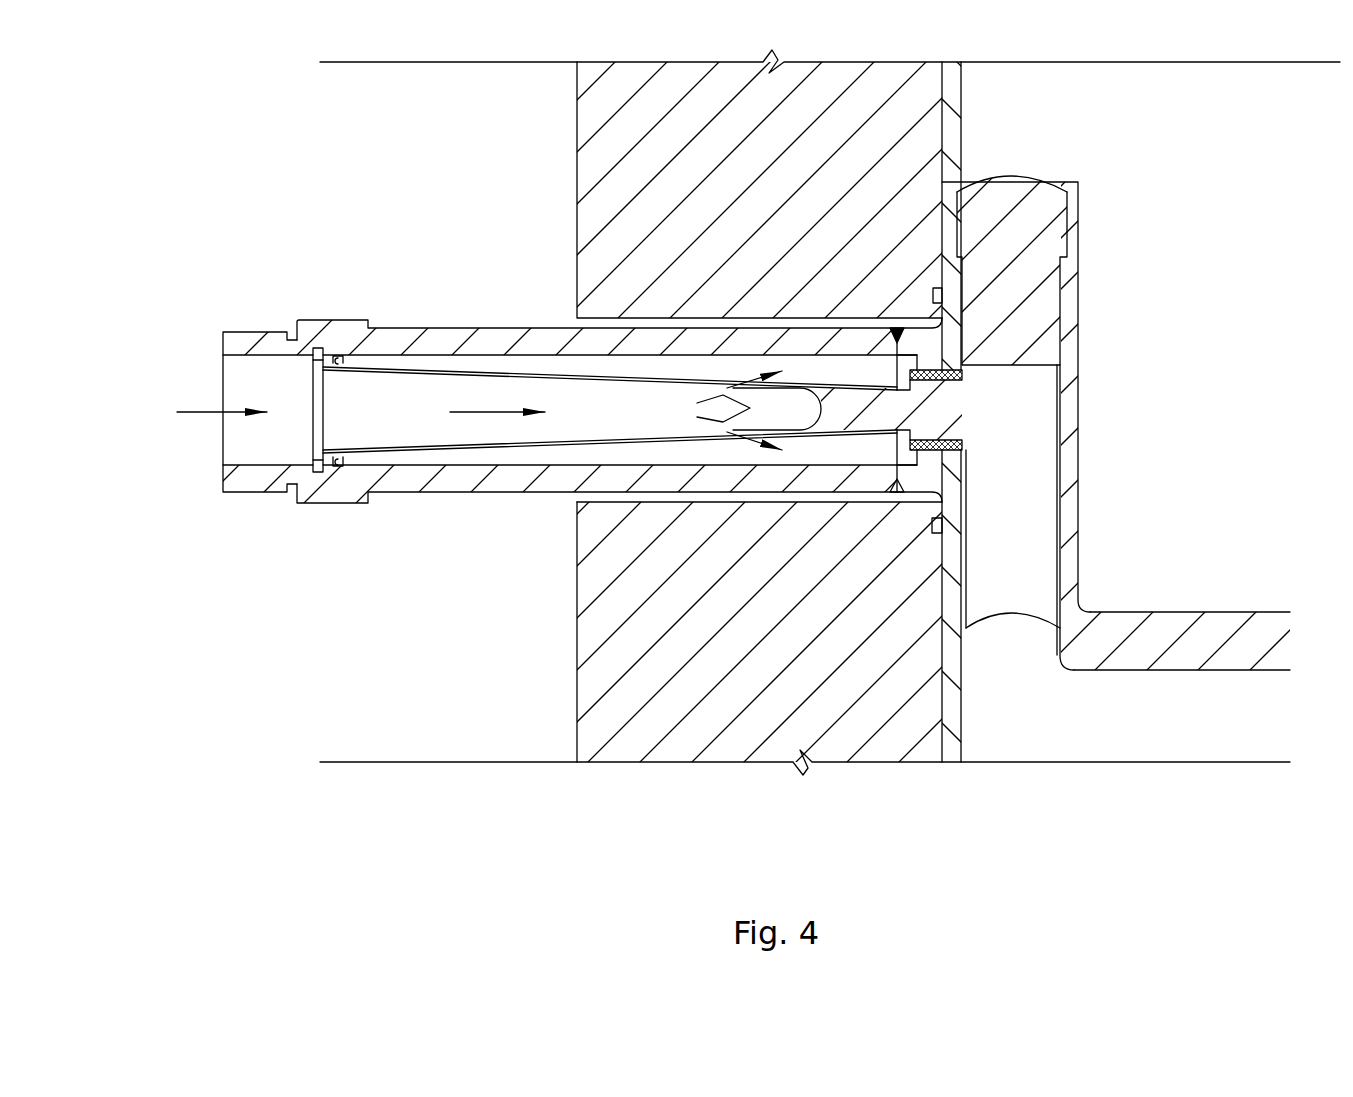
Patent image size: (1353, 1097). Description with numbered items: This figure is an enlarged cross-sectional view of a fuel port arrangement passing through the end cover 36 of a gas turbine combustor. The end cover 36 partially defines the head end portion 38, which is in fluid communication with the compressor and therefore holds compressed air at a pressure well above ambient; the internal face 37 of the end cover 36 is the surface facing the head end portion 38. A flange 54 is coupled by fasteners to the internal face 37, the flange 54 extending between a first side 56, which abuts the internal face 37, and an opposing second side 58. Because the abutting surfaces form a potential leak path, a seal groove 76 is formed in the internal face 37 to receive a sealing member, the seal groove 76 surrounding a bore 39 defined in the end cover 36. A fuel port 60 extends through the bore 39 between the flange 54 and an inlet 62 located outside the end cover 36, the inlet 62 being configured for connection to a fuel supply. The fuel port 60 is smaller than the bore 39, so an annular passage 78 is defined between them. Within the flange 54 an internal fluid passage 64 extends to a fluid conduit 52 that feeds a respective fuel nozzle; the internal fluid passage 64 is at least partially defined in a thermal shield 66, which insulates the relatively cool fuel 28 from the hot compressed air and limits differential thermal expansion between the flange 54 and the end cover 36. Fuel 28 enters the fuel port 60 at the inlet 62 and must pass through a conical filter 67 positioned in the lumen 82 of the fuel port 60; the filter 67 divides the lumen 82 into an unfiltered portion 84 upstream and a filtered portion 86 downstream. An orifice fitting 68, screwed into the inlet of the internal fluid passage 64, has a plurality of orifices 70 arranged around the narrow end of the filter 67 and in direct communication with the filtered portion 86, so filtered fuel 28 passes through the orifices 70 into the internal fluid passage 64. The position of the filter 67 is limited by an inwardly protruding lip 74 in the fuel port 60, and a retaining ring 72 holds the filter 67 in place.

The fuel 28 is at (218, 412).
The end cover 36 is at (634, 730).
The internal face 37 is at (945, 104).
The head end portion 38 is at (1236, 424).
The bore 39 is at (640, 318).
The fluid conduit 52 is at (1200, 745).
The flange 54 is at (1070, 467).
The first side 56 is at (938, 695).
The second side 58 is at (1080, 303).
The fuel port 60 is at (435, 490).
The inlet 62 is at (233, 395).
The internal fluid passage 64 is at (1028, 513).
The thermal shield 66 is at (1045, 178).
The filter 67 is at (498, 378).
The orifice fitting 68 is at (945, 412).
The orifice 70 is at (952, 437).
The retaining ring 72 is at (317, 445).
The lip 74 is at (340, 466).
The seal groove 76 is at (942, 522).
The annular passage 78 is at (580, 495).
The lumen 82 is at (273, 393).
The unfiltered portion 84 is at (393, 423).
The filtered portion 86 is at (846, 383).